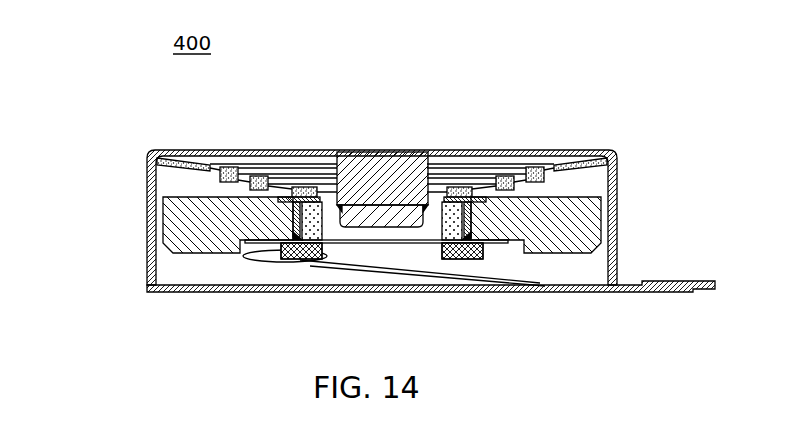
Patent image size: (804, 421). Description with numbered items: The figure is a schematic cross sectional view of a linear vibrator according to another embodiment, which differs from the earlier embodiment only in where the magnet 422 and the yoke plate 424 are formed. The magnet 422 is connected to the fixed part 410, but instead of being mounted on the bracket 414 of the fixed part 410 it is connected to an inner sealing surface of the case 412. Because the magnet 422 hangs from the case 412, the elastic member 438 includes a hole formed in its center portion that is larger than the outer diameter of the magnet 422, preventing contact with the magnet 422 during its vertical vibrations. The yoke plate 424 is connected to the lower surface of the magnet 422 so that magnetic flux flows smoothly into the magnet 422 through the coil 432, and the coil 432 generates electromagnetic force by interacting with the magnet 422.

The fixed part 410 is at (66, 244).
The case 412 is at (147, 255).
The bracket 414 is at (150, 291).
The magnet 422 is at (395, 155).
The yoke plate 424 is at (296, 188).
The coil 432 is at (313, 245).
The elastic member 438 is at (563, 157).